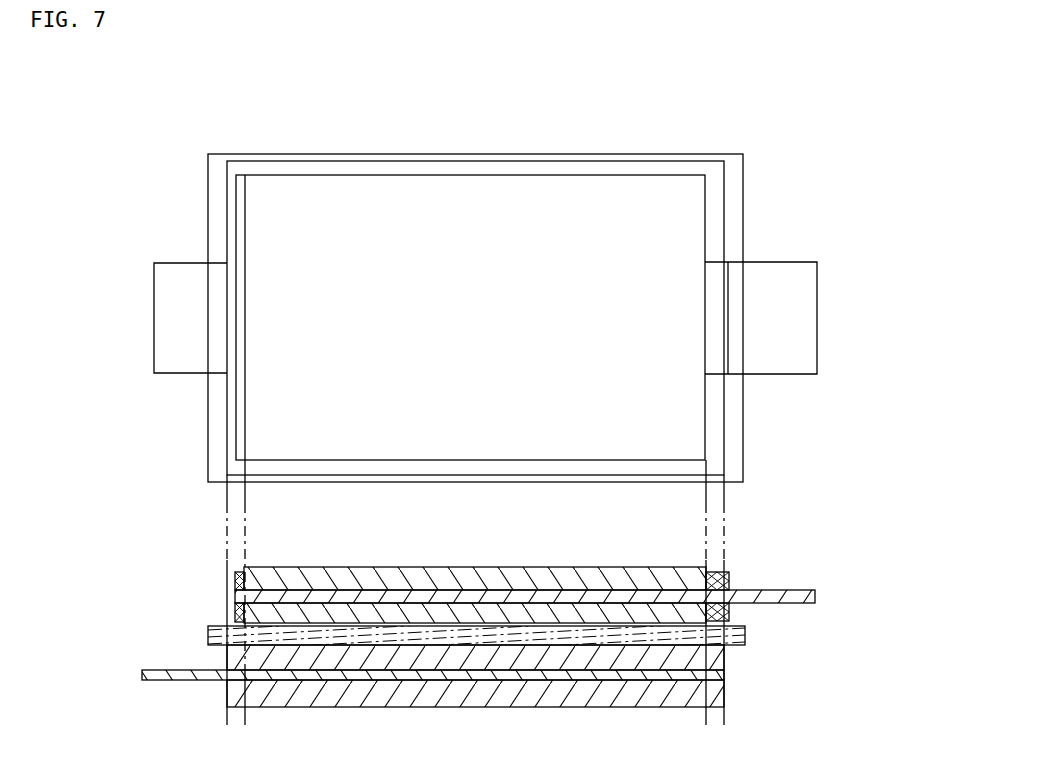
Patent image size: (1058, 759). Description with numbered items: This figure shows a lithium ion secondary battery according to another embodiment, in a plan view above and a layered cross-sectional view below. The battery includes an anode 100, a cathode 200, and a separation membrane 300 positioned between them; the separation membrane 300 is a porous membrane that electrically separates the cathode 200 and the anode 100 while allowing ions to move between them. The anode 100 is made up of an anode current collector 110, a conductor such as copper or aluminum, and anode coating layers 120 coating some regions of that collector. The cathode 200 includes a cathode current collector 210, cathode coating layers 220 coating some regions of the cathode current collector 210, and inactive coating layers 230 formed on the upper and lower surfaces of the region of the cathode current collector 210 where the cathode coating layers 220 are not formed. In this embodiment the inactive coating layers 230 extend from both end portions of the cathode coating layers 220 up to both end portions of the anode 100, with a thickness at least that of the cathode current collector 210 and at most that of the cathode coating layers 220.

The anode 100 is at (385, 405).
The anode current collector 110 is at (140, 673).
The anode coating layers 120 is at (235, 658).
The cathode 200 is at (623, 197).
The cathode current collector 210 is at (798, 347).
The cathode coating layers 220 is at (665, 572).
The inactive coating layers 230 is at (718, 292).
The separation membrane 300 is at (475, 155).